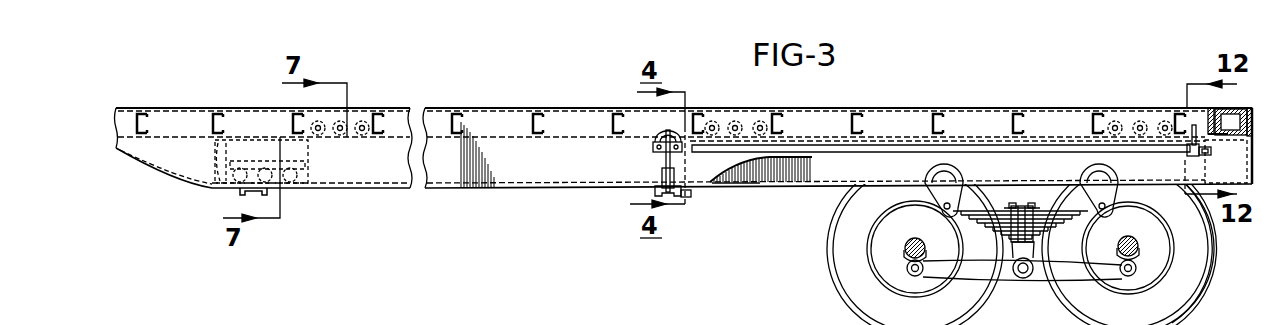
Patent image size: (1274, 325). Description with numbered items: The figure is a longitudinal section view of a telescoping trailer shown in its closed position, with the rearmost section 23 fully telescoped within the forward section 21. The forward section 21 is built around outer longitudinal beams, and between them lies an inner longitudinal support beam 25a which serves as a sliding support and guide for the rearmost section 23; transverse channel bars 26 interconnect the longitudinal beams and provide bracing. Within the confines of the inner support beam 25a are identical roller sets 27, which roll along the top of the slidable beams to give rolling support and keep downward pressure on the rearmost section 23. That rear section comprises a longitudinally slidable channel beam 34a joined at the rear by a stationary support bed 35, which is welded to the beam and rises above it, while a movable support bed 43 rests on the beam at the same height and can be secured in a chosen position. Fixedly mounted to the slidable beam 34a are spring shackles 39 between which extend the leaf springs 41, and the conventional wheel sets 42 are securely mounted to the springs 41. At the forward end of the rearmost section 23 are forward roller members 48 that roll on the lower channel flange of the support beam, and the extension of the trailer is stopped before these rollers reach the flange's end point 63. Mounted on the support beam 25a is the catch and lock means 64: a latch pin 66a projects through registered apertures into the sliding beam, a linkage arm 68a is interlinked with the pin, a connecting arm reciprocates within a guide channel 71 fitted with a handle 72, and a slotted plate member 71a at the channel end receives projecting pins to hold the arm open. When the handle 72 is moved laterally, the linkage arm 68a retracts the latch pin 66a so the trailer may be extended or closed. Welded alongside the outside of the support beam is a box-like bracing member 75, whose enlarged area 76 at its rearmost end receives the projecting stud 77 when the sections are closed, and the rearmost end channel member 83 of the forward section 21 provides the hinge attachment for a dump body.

The forward section 21 is at (463, 190).
The rearmost section 23 is at (800, 192).
The inner longitudinal support beam 25a is at (552, 168).
The transverse channel bars 26 is at (142, 112).
The roller sets 27 is at (363, 121).
The longitudinally slidable channel beam 34a is at (862, 173).
The stationary support bed 35 is at (1247, 146).
The spring shackles 39 is at (950, 192).
The leaf springs 41 is at (1002, 222).
The wheel sets 42 is at (850, 274).
The movable support bed 43 is at (1228, 109).
The forward roller members 48 is at (288, 186).
The end point 63 is at (713, 186).
The catch and lock means 64 is at (656, 158).
The latch pin 66a is at (663, 126).
The linkage arm 68a is at (675, 168).
The guide channel 71 is at (654, 190).
The slotted plate member 71a is at (684, 194).
The handle 72 is at (661, 176).
The box-like bracing member 75 is at (928, 150).
The enlarged area 76 is at (1188, 151).
The projecting stud 77 is at (1205, 156).
The rearmost end channel member 83 is at (1209, 110).